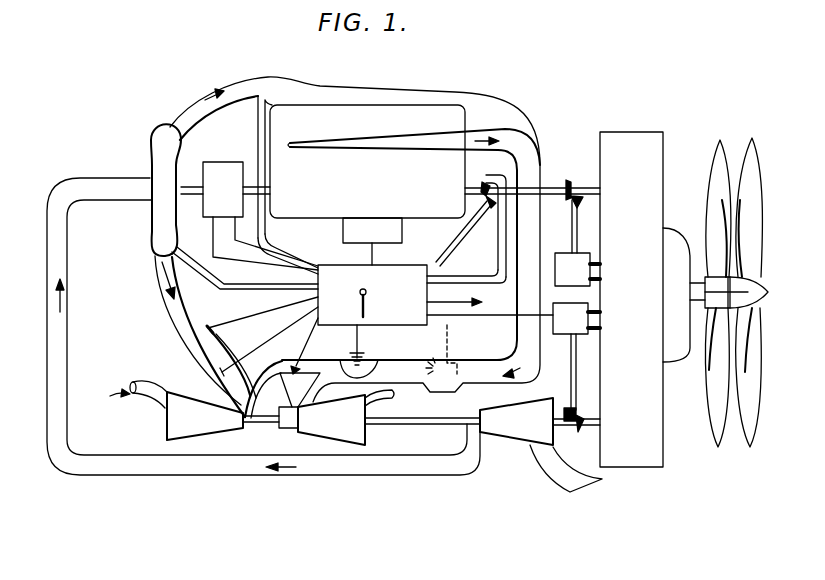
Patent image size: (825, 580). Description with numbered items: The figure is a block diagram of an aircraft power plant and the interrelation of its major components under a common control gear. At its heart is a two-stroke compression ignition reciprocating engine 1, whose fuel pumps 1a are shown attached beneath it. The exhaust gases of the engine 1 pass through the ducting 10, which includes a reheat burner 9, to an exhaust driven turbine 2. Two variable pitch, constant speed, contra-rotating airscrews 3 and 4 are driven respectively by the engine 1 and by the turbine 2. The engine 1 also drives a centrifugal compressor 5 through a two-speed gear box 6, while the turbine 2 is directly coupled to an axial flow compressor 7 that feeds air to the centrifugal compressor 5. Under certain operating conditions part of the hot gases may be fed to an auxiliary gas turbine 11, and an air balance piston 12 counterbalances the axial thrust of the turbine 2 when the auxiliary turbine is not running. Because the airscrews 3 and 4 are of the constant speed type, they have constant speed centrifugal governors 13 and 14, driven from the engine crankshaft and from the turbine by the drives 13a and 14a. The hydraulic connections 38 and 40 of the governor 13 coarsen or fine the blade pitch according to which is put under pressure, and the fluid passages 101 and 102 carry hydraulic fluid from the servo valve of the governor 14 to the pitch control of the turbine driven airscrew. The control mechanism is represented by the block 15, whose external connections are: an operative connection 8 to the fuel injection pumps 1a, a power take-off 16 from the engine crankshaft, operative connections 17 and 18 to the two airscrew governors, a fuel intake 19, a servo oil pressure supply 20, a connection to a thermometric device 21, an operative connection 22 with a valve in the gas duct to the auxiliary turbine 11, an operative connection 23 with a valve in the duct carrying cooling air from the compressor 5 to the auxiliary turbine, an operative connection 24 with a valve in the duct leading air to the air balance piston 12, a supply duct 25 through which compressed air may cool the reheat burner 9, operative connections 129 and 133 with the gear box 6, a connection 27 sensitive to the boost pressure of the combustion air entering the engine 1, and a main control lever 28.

The two-stroke compression ignition reciprocating engine 1 is at (400, 127).
The fuel pumps 1a is at (382, 232).
The exhaust driven turbine 2 is at (343, 435).
The airscrew 3 is at (751, 162).
The airscrew 4 is at (720, 170).
The centrifugal compressor 5 is at (158, 127).
The two-speed gear box 6 is at (233, 178).
The axial flow compressor 7 is at (540, 435).
The operative connection 8 is at (374, 255).
The reheat burner 9 is at (452, 358).
The ducting 10 is at (535, 356).
The auxiliary gas turbine 11 is at (178, 428).
The air balance piston 12 is at (290, 416).
The constant speed centrifugal governor 13 is at (572, 262).
The drive 13a is at (578, 228).
The constant speed centrifugal governor 14 is at (567, 318).
The drive 14a is at (578, 382).
The control mechanism 15 is at (418, 306).
The power take-off 16 is at (481, 211).
The operative connection 17 is at (490, 272).
The operative connection 18 is at (470, 318).
The fuel intake 19 is at (488, 280).
The servo oil pressure supply 20 is at (479, 304).
The thermometric device 21 is at (359, 341).
The operative connection 22 is at (237, 337).
The operative connection 23 is at (268, 336).
The operative connection 24 is at (240, 315).
The supply duct 25 is at (192, 272).
The connection 27 is at (272, 247).
The main control lever 28 is at (367, 302).
The hydraulic connection 38 is at (601, 264).
The connection 40 is at (601, 280).
The fluid passage 101 is at (601, 312).
The fluid passage 102 is at (601, 329).
The operative connection 129 is at (280, 259).
The operative connection 133 is at (213, 233).